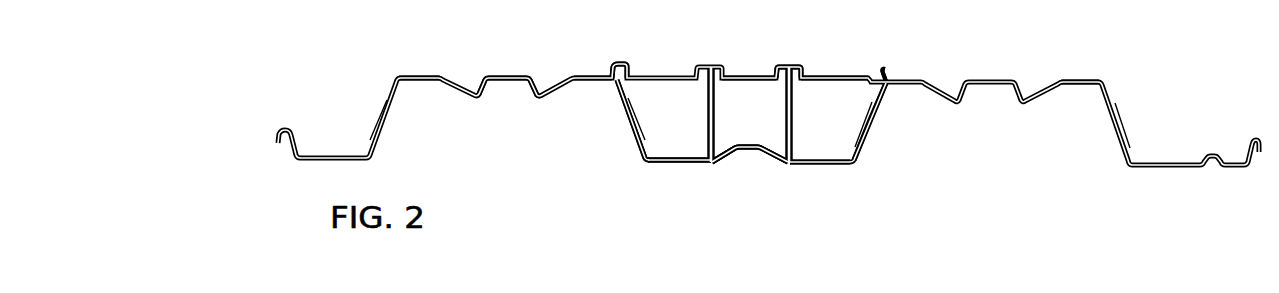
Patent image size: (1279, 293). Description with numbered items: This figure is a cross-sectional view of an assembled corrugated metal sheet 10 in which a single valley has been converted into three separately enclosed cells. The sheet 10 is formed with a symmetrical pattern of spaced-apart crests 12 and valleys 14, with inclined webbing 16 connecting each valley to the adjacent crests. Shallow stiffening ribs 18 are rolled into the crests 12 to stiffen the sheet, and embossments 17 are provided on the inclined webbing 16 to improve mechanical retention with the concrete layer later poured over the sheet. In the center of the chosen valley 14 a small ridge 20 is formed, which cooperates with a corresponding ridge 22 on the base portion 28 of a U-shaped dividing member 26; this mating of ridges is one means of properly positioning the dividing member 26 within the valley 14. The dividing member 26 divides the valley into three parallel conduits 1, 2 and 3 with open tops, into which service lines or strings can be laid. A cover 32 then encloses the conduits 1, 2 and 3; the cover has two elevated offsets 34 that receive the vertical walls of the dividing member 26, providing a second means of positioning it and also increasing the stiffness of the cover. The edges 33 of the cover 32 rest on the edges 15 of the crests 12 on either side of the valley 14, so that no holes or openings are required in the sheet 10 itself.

The corrugated metal sheet 10 is at (1133, 101).
The crest 12 is at (416, 76).
The valley 14 is at (692, 162).
The edge of the crest 15 is at (620, 95).
The inclined webbing 16 is at (866, 134).
The embossment 17 is at (378, 112).
The stiffening rib 18 is at (517, 99).
The ridge 20 is at (747, 152).
The ridge 22 is at (742, 148).
The dividing member 26 is at (793, 92).
The base portion 28 is at (712, 166).
The cover 32 is at (852, 76).
The edge of the cover 33 is at (620, 64).
The elevated offset 34 is at (781, 68).
The conduit 1 is at (680, 131).
The conduit 2 is at (760, 131).
The conduit 3 is at (830, 131).